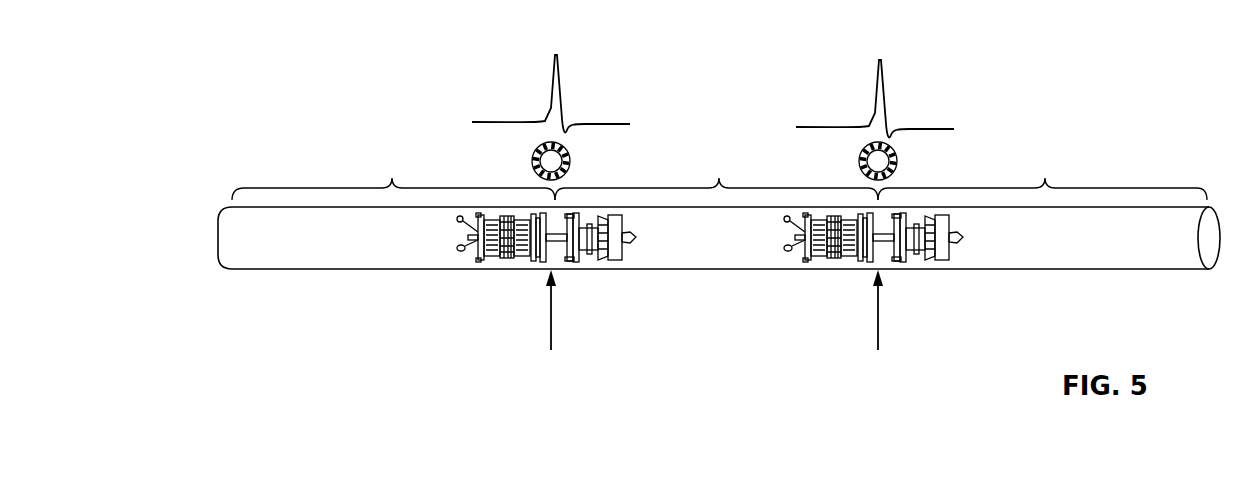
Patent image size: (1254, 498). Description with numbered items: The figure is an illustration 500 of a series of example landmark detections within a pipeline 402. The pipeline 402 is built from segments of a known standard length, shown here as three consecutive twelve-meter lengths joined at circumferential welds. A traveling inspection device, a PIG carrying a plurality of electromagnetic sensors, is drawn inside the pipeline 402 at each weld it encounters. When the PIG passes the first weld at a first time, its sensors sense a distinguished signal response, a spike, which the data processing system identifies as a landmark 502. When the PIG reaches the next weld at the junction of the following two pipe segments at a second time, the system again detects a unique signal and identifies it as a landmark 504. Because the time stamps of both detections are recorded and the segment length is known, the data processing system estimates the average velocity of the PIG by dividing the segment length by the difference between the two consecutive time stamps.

The illustration 500 is at (320, 49).
The pipeline 402 is at (285, 272).
The landmark 502 is at (552, 84).
The landmark 504 is at (877, 94).